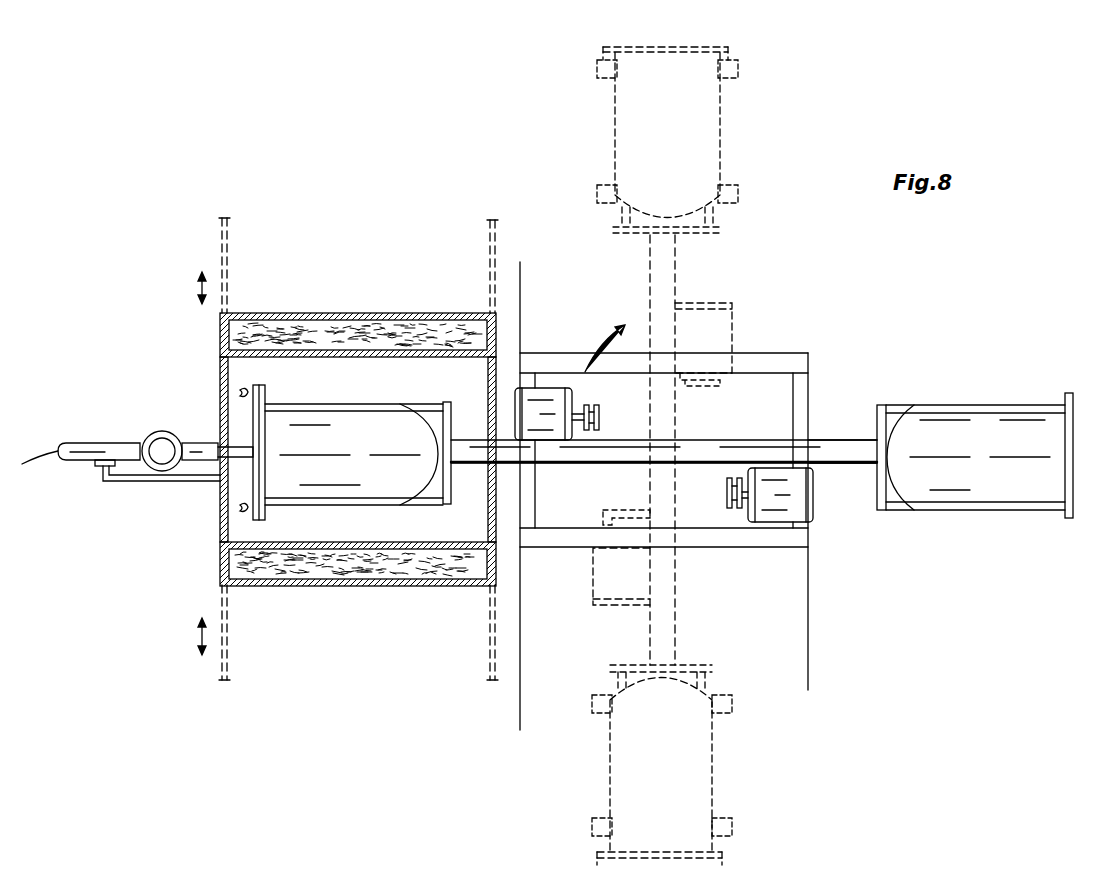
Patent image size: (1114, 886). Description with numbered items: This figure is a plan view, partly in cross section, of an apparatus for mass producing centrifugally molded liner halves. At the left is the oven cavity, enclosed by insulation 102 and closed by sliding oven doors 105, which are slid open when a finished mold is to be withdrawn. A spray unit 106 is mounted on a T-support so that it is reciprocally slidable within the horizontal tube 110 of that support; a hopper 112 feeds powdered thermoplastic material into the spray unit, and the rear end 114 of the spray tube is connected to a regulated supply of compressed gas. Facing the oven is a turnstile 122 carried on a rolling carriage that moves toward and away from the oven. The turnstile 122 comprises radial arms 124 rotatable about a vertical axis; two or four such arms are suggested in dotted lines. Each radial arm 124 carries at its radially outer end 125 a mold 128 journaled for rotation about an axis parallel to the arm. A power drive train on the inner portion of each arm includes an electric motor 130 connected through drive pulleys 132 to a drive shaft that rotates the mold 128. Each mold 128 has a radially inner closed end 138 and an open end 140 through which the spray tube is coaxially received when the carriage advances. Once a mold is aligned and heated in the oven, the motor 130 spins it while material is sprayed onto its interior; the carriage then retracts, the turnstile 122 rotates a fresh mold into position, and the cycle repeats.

The insulation 102 is at (330, 327).
The oven doors 105 is at (232, 260).
The spray unit 106 is at (95, 477).
The horizontal tube 110 is at (194, 441).
The hopper 112 is at (160, 431).
The rear end 114 is at (66, 442).
The turnstile 122 is at (750, 438).
The radial arm 124 is at (670, 407).
The radially outer end 125 is at (846, 464).
The mold 128 is at (322, 393).
The electric motor 130 is at (728, 304).
The drive pulley 132 is at (738, 372).
The radially inner closed end 138 is at (402, 405).
The open end 140 is at (247, 486).